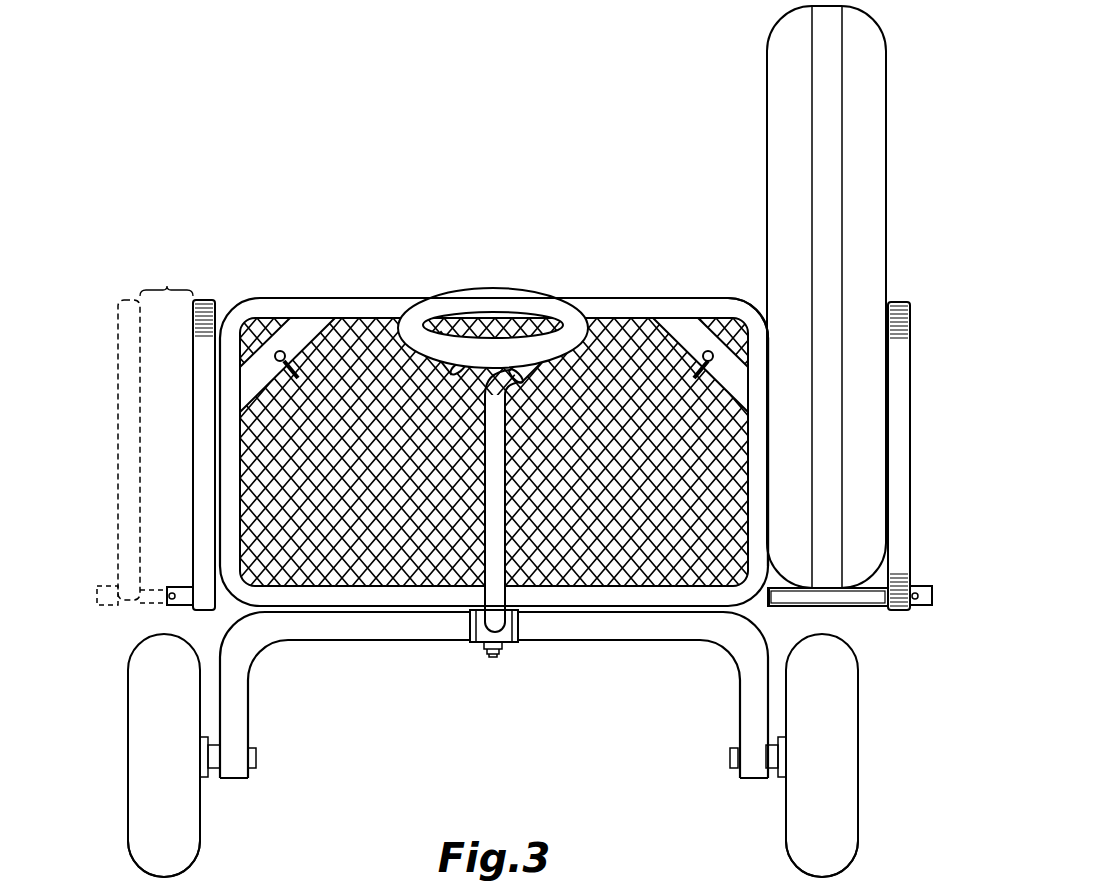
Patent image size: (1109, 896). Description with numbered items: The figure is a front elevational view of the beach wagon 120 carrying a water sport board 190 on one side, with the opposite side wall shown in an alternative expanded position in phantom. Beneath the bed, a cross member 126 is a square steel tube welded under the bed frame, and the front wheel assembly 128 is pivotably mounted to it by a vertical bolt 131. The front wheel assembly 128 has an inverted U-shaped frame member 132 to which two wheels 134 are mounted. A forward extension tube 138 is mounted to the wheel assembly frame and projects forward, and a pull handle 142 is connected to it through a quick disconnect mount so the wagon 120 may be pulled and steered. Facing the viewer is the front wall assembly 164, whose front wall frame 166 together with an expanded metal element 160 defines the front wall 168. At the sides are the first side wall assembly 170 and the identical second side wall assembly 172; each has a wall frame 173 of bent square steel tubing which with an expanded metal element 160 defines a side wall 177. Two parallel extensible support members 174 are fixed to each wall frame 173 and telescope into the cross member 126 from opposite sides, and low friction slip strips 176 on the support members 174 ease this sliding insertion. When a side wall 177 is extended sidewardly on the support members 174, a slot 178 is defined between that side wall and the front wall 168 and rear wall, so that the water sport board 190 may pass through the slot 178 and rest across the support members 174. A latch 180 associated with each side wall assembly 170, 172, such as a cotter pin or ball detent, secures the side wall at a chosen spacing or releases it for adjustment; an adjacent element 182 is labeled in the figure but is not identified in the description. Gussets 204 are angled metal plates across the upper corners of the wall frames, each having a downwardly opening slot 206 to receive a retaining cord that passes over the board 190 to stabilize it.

The beach wagon 120 is at (291, 214).
The cross member 126 is at (262, 612).
The front wheel assembly 128 is at (128, 820).
The vertical bolt 131 is at (492, 658).
The frame member 132 is at (247, 720).
The wheel 134 is at (128, 845).
The forward extension tube 138 is at (466, 628).
The pull handle 142 is at (492, 288).
The expanded metal element 160 is at (622, 325).
The front wall assembly 164 is at (615, 612).
The front wall frame 166 is at (352, 298).
The front wall 168 is at (690, 300).
The first side wall assembly 170 is at (911, 395).
The second side wall assembly 172 is at (193, 438).
The wall frame 173 is at (220, 300).
The extensible support member 174 is at (155, 580).
The slip strip 176 is at (832, 602).
The side wall 177 is at (193, 395).
The slot 178 is at (768, 370).
The latch 180 is at (912, 586).
The nut 182 is at (933, 600).
The water sport board 190 is at (762, 103).
The gusset 204 is at (277, 347).
The downwardly opening slot 206 is at (301, 332).